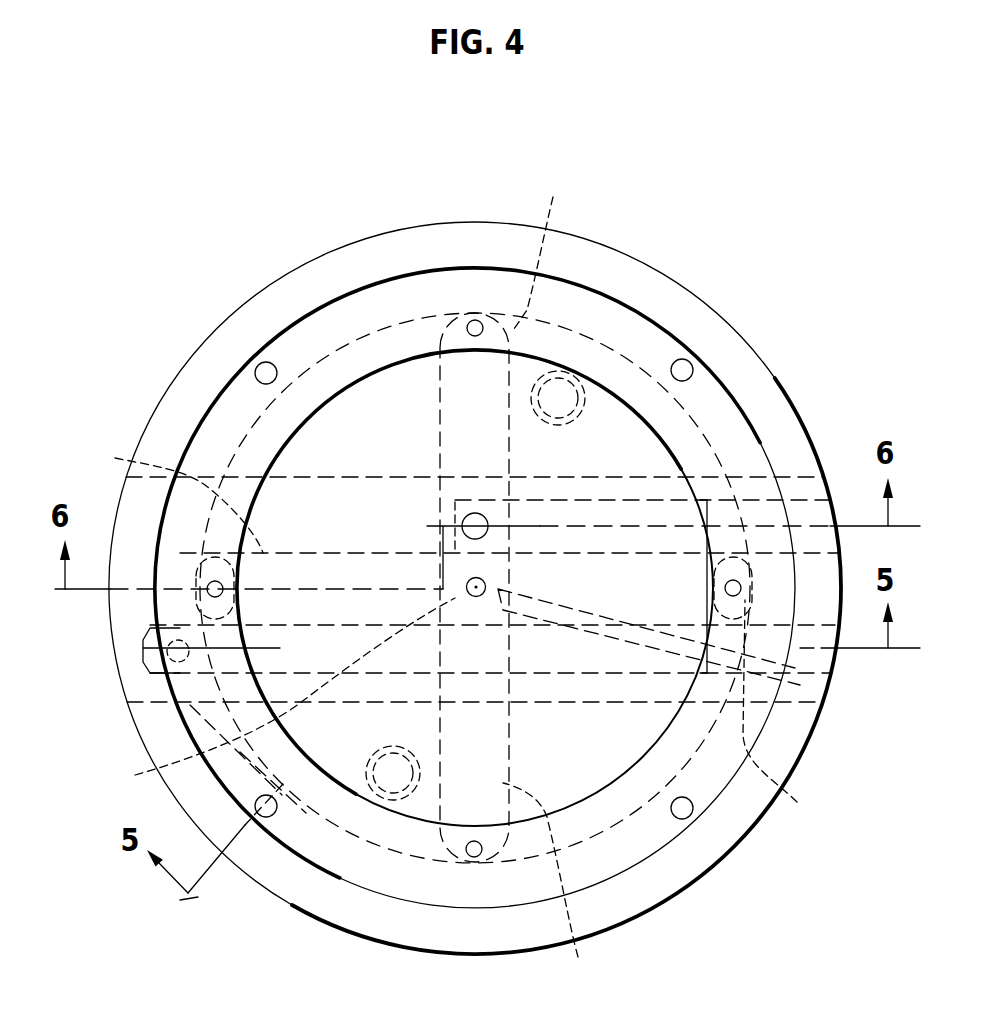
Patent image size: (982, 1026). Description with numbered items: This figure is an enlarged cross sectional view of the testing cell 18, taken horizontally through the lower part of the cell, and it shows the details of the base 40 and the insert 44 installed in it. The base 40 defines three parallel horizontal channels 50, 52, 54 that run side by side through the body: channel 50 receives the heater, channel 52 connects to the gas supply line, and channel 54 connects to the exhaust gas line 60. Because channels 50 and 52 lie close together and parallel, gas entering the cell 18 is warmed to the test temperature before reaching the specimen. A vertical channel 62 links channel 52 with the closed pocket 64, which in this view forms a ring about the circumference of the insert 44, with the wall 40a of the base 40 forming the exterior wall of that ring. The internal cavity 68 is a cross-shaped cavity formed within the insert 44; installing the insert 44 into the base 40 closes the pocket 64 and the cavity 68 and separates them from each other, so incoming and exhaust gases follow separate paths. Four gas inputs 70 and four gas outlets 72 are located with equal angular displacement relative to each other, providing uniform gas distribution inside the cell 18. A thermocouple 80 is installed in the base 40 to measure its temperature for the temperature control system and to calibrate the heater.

The cell 18 is at (677, 293).
The base 40 is at (598, 250).
The wall 40a is at (617, 298).
The insert 44 is at (670, 347).
The channel 50 is at (826, 577).
The channel 52 is at (832, 665).
The channel 54 is at (837, 510).
The exhaust gas line 60 is at (470, 513).
The vertical channel 62 is at (148, 668).
The closed pocket 64 is at (722, 420).
The internal cavity 68 is at (345, 576).
The gas inputs 70 is at (264, 362).
The gas outlets 72 is at (470, 321).
The thermocouple 80 is at (784, 714).